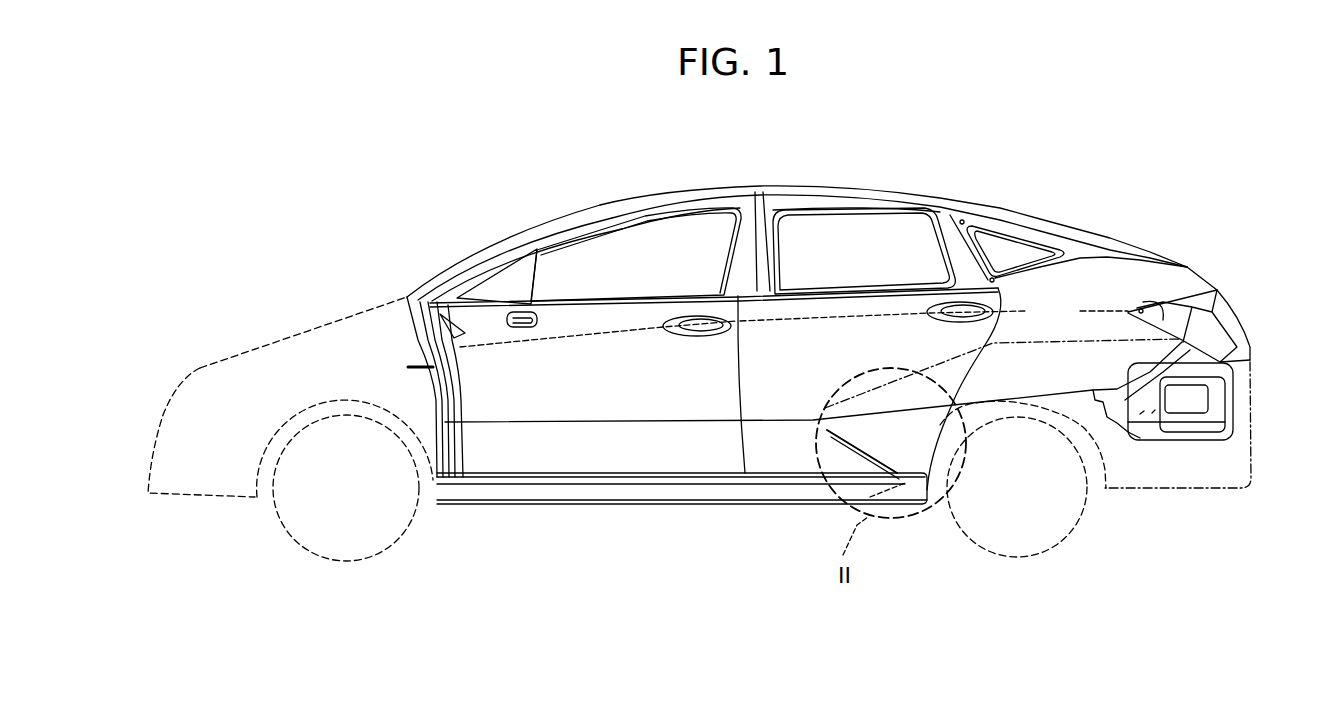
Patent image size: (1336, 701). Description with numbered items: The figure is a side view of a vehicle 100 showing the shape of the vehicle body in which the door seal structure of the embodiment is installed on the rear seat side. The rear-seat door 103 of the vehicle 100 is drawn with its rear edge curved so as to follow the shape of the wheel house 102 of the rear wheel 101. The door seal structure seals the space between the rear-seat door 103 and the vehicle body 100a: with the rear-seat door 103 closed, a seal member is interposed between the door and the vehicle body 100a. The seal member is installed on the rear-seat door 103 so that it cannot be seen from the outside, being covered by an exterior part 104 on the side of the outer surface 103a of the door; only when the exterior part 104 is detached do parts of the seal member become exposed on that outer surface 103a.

The vehicle 100 is at (550, 218).
The vehicle body 100a is at (838, 191).
The rear wheel 101 is at (1030, 513).
The wheel house 102 is at (1098, 470).
The rear-seat door 103 is at (768, 365).
The outer surface of the door 103a is at (772, 447).
The exterior part 104 is at (907, 447).